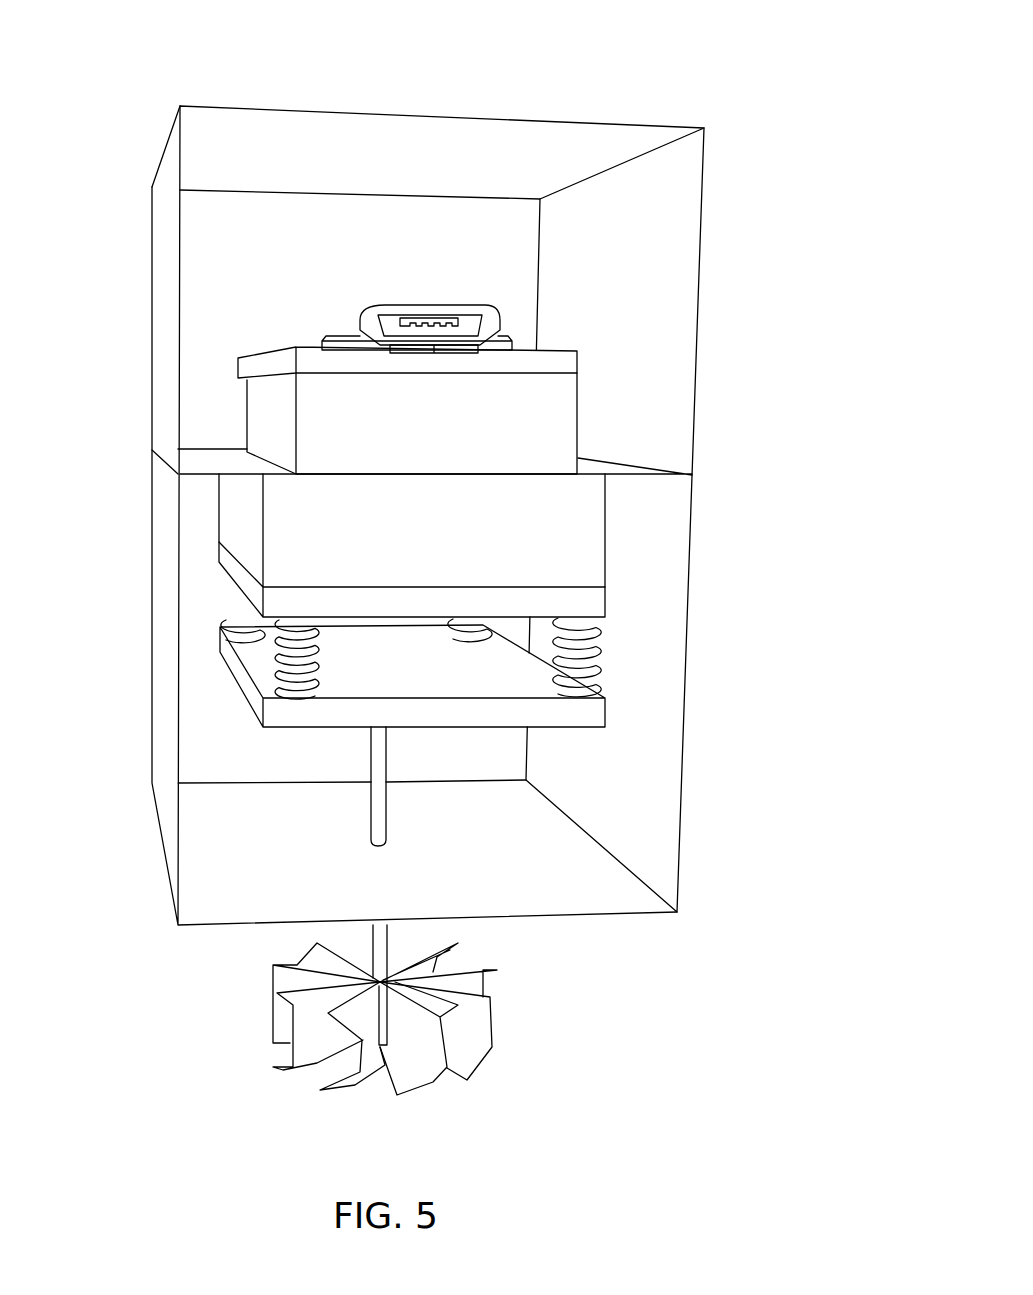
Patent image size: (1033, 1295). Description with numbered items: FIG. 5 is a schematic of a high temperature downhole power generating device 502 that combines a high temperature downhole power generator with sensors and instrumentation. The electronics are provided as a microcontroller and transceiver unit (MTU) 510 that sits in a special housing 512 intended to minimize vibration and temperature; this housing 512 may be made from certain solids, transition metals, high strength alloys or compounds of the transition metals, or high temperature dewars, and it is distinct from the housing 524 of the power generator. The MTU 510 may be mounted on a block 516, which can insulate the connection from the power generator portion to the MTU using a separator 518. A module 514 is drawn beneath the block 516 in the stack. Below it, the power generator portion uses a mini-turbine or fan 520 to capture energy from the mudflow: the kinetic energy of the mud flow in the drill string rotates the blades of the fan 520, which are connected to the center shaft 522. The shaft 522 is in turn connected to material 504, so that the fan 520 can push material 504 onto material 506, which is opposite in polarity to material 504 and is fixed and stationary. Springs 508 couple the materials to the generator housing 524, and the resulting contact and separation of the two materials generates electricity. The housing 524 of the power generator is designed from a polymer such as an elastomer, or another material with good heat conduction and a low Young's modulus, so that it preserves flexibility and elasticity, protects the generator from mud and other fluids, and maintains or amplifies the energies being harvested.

The high temperature downhole power generating device 502 is at (602, 60).
The material 504 is at (295, 716).
The material 506 is at (280, 604).
The springs 508 is at (620, 667).
The microcontroller and transceiver unit (MTU) 510 is at (590, 368).
The housing 512 is at (287, 106).
The sensor module 514 is at (580, 528).
The block 516 is at (262, 397).
The separator 518 is at (207, 462).
The mini-turbine or fan 520 is at (512, 1025).
The center shaft 522 is at (365, 812).
The housing 524 is at (682, 775).